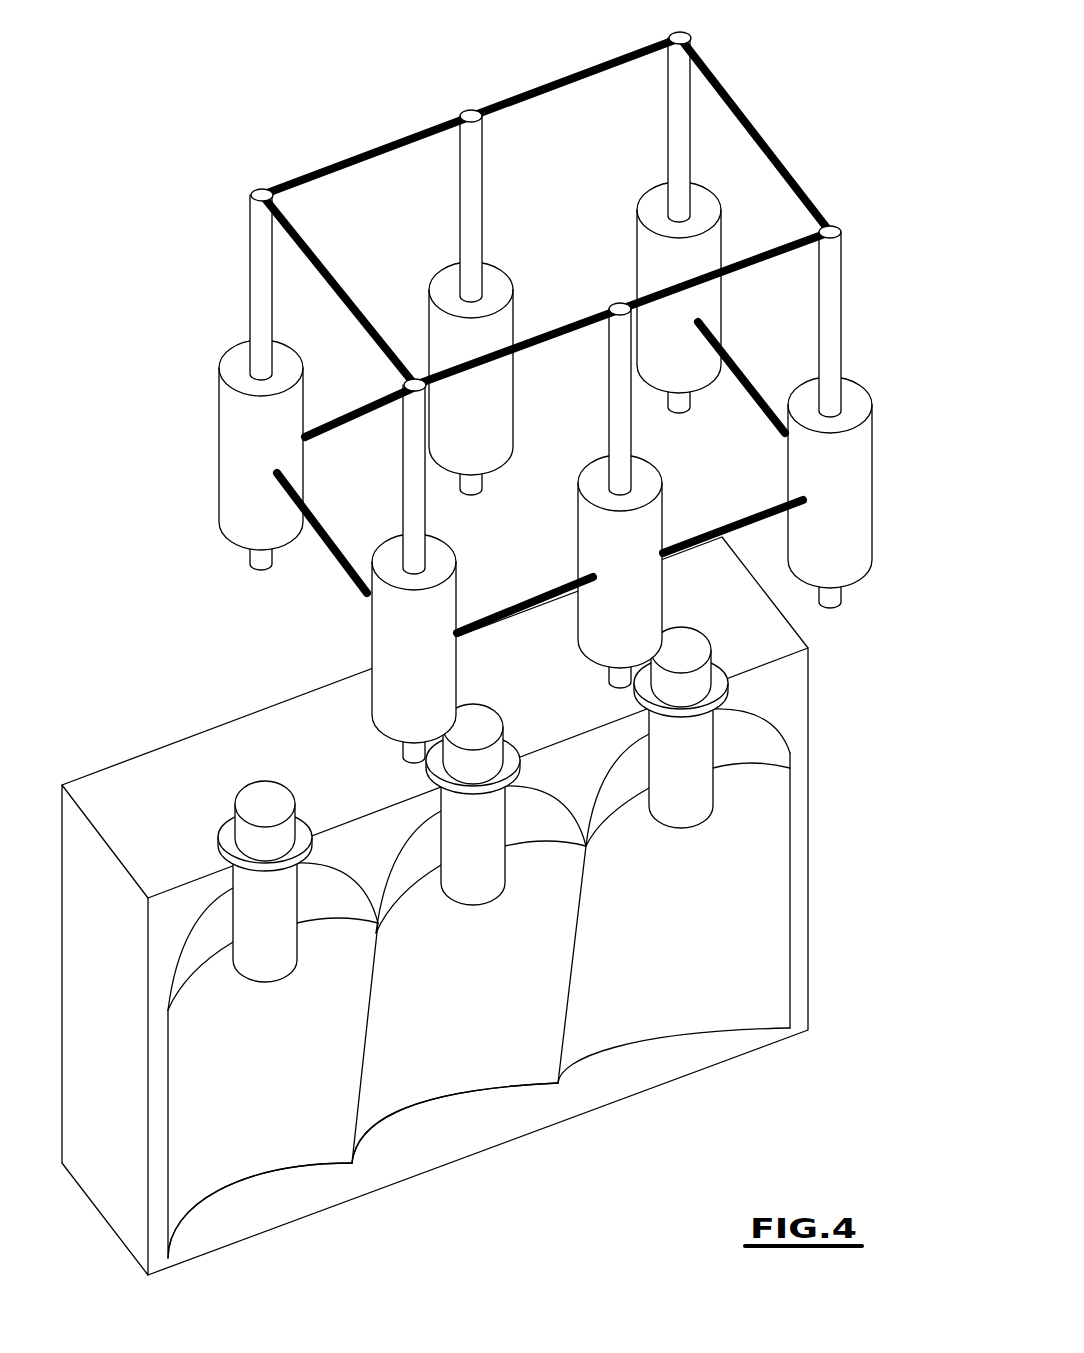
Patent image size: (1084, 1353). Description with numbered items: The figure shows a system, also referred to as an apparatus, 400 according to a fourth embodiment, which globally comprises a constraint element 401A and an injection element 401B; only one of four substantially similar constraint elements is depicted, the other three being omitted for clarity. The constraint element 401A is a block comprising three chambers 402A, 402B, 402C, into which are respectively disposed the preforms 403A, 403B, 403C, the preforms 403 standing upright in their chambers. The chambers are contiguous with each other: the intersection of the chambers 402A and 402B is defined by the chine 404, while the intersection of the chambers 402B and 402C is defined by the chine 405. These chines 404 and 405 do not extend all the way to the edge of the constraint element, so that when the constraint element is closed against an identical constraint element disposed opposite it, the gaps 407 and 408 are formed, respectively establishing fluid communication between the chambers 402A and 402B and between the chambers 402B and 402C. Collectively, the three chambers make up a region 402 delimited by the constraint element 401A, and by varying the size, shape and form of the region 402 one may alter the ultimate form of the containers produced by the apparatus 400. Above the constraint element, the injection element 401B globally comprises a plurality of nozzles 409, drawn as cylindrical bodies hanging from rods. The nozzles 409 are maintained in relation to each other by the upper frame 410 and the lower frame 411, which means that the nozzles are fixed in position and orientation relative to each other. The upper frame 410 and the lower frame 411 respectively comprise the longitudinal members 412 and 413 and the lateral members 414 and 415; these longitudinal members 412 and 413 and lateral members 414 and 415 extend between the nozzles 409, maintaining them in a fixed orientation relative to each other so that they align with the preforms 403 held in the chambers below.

The system 400 is at (147, 164).
The constraint element 401A is at (860, 941).
The injection element 401B is at (840, 76).
The region 402 is at (743, 997).
The chamber 402A is at (290, 1115).
The chamber 402B is at (490, 1037).
The chamber 402C is at (712, 962).
The preforms 403 is at (727, 848).
The preform 403A is at (268, 963).
The preform 403B is at (472, 878).
The preform 403C is at (690, 753).
The chine 404 is at (363, 1098).
The chine 405 is at (570, 1030).
The gap 407 is at (358, 1184).
The gap 408 is at (569, 1105).
The nozzles 409 is at (233, 437).
The upper frame 410 is at (338, 138).
The lower frame 411 is at (357, 303).
The longitudinal member 412 is at (390, 140).
The longitudinal member 413 is at (357, 425).
The lateral member 414 is at (740, 110).
The lateral member 415 is at (337, 567).